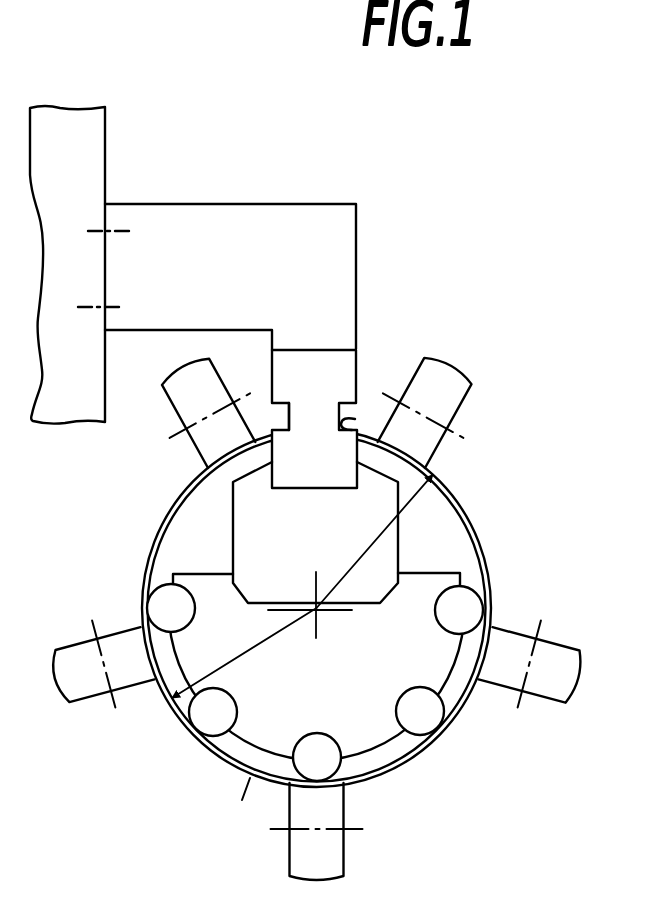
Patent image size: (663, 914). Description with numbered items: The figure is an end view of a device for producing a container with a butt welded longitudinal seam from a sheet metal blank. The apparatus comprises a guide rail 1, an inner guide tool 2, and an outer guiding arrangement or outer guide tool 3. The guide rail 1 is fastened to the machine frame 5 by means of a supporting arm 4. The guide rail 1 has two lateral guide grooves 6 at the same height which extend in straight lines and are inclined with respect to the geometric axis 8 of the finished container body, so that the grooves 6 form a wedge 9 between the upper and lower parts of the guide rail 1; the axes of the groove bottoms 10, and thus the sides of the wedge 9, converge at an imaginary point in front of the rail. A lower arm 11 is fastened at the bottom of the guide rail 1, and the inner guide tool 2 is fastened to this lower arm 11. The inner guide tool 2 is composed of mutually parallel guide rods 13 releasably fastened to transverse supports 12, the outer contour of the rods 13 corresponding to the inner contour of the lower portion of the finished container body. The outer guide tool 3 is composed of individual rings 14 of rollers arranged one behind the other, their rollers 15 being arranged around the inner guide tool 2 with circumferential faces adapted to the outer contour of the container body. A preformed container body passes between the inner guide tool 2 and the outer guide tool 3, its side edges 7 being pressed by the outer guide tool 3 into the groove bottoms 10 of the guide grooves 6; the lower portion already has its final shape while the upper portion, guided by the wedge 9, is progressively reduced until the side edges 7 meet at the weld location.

The guide rail 1 is at (337, 362).
The inner guide tool 2 is at (432, 566).
The outer guide tool 3 is at (578, 636).
The supporting arm 4 is at (215, 228).
The machine frame 5 is at (70, 125).
The lateral guide grooves 6 is at (346, 409).
The side edges 7 is at (291, 432).
The geometric axis 8 is at (320, 613).
The wedge 9 is at (302, 411).
The groove bottoms 10 is at (353, 428).
The lower arm 11 is at (243, 543).
The transverse supports 12 is at (368, 733).
The guide rods 13 is at (425, 717).
The rings of rollers 14 is at (107, 729).
The rollers 15 is at (328, 852).